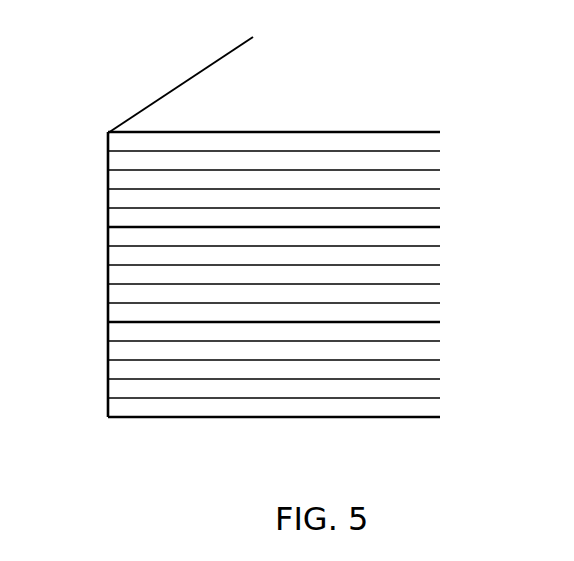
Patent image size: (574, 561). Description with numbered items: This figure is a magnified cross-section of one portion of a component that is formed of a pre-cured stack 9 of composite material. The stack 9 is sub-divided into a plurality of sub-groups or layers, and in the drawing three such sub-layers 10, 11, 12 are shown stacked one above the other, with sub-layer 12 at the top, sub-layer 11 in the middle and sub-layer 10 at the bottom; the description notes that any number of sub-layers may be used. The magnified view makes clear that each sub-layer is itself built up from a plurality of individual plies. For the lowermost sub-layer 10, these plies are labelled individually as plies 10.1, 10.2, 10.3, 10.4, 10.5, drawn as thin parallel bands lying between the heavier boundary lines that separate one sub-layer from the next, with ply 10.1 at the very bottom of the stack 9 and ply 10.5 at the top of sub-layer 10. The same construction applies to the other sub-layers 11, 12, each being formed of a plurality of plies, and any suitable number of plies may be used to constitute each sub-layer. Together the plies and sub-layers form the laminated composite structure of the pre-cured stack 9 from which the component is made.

The pre-cured stack 9 is at (185, 108).
The sub-layer 12 is at (92, 182).
The sub-layer 11 is at (92, 277).
The sub-layer 10 is at (289, 299).
The ply 10.1 is at (441, 407).
The ply 10.2 is at (441, 390).
The ply 10.3 is at (441, 370).
The ply 10.4 is at (440, 352).
The ply 10.5 is at (440, 330).